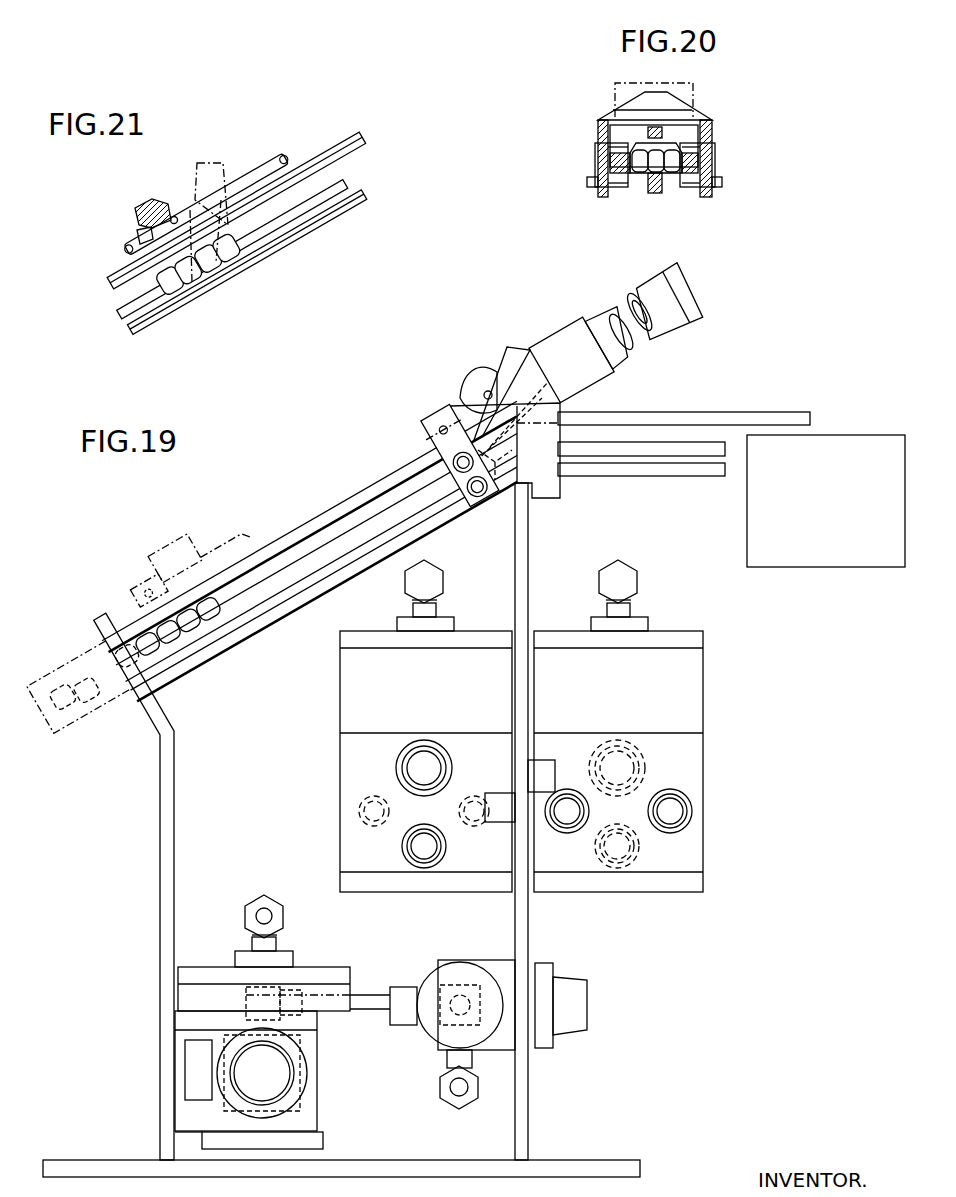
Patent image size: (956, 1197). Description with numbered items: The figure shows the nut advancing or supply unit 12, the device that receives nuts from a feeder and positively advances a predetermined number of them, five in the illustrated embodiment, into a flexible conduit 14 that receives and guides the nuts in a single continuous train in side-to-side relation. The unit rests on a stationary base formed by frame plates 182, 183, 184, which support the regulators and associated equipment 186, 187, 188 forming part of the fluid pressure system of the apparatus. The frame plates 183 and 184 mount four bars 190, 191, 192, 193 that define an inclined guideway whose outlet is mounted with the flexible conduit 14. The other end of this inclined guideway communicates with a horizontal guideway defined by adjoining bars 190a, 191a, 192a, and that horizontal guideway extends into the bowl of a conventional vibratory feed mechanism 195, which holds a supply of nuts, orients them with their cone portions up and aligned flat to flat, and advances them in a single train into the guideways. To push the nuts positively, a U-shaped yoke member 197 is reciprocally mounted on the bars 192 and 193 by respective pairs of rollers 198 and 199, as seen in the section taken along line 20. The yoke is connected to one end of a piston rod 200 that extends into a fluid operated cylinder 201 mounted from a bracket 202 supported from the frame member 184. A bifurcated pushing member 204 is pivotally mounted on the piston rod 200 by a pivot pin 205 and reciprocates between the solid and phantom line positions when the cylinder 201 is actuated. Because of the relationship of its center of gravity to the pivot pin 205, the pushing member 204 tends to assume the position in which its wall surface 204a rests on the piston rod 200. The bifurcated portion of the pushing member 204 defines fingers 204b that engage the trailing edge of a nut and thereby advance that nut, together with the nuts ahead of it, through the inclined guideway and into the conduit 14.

In FIG. 19, the nut advancing or supply unit 12 is at (333, 446).
In FIG. 19, the flexible conduit 14 is at (45, 685).
In FIG. 19, the section line 20— 20 is at (270, 504).
In FIG. 19, the frame plate 182 is at (420, 1128).
In FIG. 19, the frame plate 183 is at (160, 1066).
In FIG. 19, the frame plate 184 is at (528, 1098).
In FIG. 19, the regulator 186 is at (617, 895).
In FIG. 19, the regulator 187 is at (455, 893).
In FIG. 19, the associated equipment 188 is at (312, 970).
In FIG. 20, the bar 190 is at (668, 130).
In FIG. 19, the bar 190 is at (383, 489).
In FIG. 19, the bar 190a is at (722, 418).
In FIG. 20, the bar 191 is at (655, 193).
In FIG. 19, the bar 191 is at (430, 540).
In FIG. 19, the bar 191a is at (697, 476).
In FIG. 20, the bar 192 is at (598, 165).
In FIG. 19, the bar 192a is at (637, 447).
In FIG. 20, the bar 193 is at (712, 167).
In FIG. 19, the vibratory feed mechanism 195 is at (857, 435).
In FIG. 20, the U-shaped yoke member 197 is at (598, 120).
In FIG. 20, the rollers 198 is at (620, 138).
In FIG. 20, the rollers 199 is at (690, 153).
In FIG. 19, the piston rod 200 is at (462, 410).
In FIG. 19, the fluid operated cylinder 201 is at (642, 297).
In FIG. 19, the bracket 202 is at (512, 352).
In FIG. 21, the pushing member 204 is at (148, 204).
In FIG. 21, the wall surface 204a is at (187, 182).
In FIG. 21, the fingers 204b is at (200, 288).
In FIG. 19, the pivot pin 205 is at (466, 375).